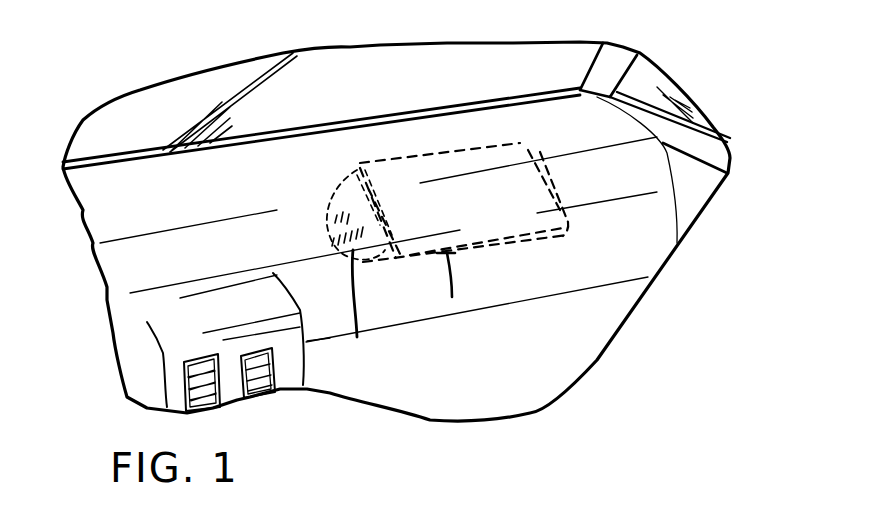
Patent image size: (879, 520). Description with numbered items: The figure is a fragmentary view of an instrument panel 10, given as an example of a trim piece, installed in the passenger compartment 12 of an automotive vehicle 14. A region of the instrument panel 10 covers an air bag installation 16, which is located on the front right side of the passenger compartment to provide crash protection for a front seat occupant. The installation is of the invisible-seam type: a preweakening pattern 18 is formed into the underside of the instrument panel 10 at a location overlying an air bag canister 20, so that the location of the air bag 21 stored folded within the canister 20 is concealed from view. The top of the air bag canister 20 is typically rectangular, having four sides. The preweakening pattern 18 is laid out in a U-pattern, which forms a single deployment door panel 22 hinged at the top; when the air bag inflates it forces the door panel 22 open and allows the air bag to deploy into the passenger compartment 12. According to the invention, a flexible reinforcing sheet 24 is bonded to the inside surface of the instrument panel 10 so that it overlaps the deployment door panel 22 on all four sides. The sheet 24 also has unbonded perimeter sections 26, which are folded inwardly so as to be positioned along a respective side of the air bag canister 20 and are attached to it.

The instrument panel 10 is at (597, 273).
The passenger compartment 12 is at (580, 338).
The automotive vehicle 14 is at (140, 97).
The air bag installation 16 is at (566, 197).
The preweakening pattern 18 is at (454, 302).
The air bag canister 20 is at (332, 199).
The air bag 21 is at (358, 340).
The deployment door panel 22 is at (446, 186).
The flexible reinforcing sheet 24 is at (519, 145).
The unbonded perimeter sections 26 is at (350, 191).